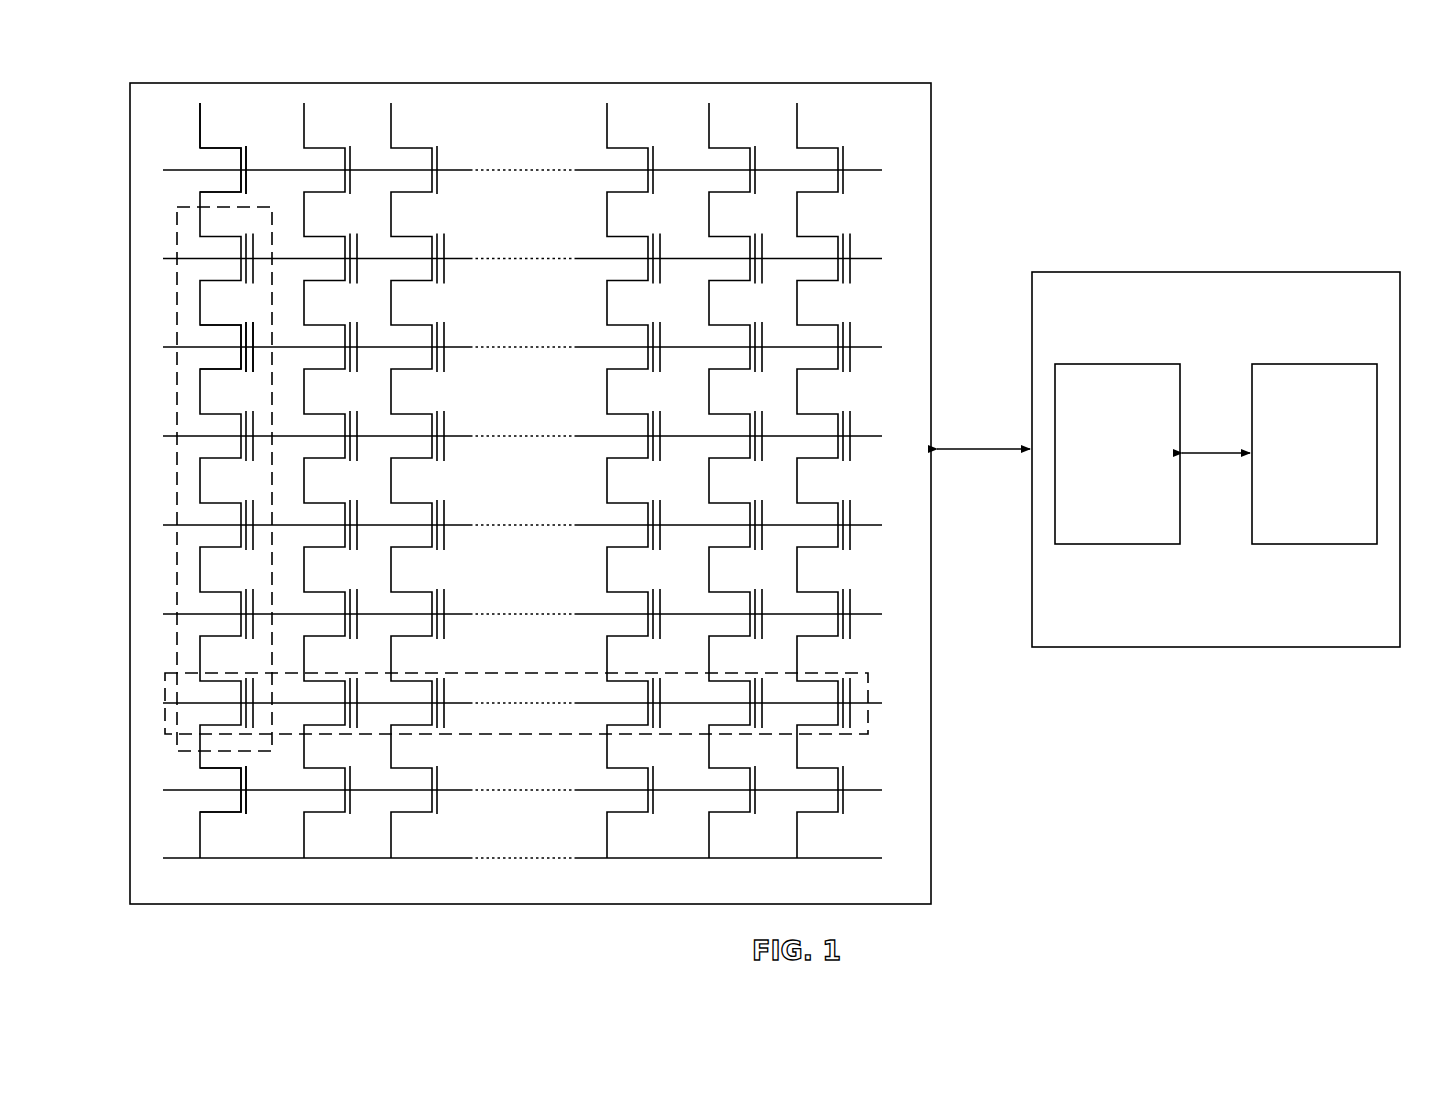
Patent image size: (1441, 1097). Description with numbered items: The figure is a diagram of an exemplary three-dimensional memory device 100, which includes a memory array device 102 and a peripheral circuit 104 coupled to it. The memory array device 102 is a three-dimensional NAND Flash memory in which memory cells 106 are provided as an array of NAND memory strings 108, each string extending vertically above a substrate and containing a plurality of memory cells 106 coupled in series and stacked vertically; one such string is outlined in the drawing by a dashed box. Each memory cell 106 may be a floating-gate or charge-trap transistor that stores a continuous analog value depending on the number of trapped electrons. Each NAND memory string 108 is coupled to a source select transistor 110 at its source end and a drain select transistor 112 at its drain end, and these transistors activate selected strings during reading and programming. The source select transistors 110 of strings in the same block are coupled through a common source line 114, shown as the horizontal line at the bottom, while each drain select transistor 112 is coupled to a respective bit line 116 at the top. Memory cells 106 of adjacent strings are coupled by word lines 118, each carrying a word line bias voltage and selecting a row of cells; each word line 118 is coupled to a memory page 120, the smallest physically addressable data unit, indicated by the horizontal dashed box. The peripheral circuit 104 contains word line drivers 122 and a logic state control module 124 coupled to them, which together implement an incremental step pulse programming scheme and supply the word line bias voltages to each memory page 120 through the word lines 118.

The 3D memory device 100 is at (1014, 67).
The memory array device 102 is at (798, 83).
The peripheral circuit 104 is at (1350, 272).
The memory cell 106 is at (241, 314).
The NAND memory string 108 is at (177, 223).
The source select transistor 110 is at (241, 825).
The drain select transistor 112 is at (240, 139).
The source line 114 is at (325, 860).
The bit line 116 is at (200, 122).
The word line 118 is at (453, 613).
The memory page 120 is at (453, 673).
The word line drivers 122 is at (1120, 364).
The logic state control module 124 is at (1313, 364).